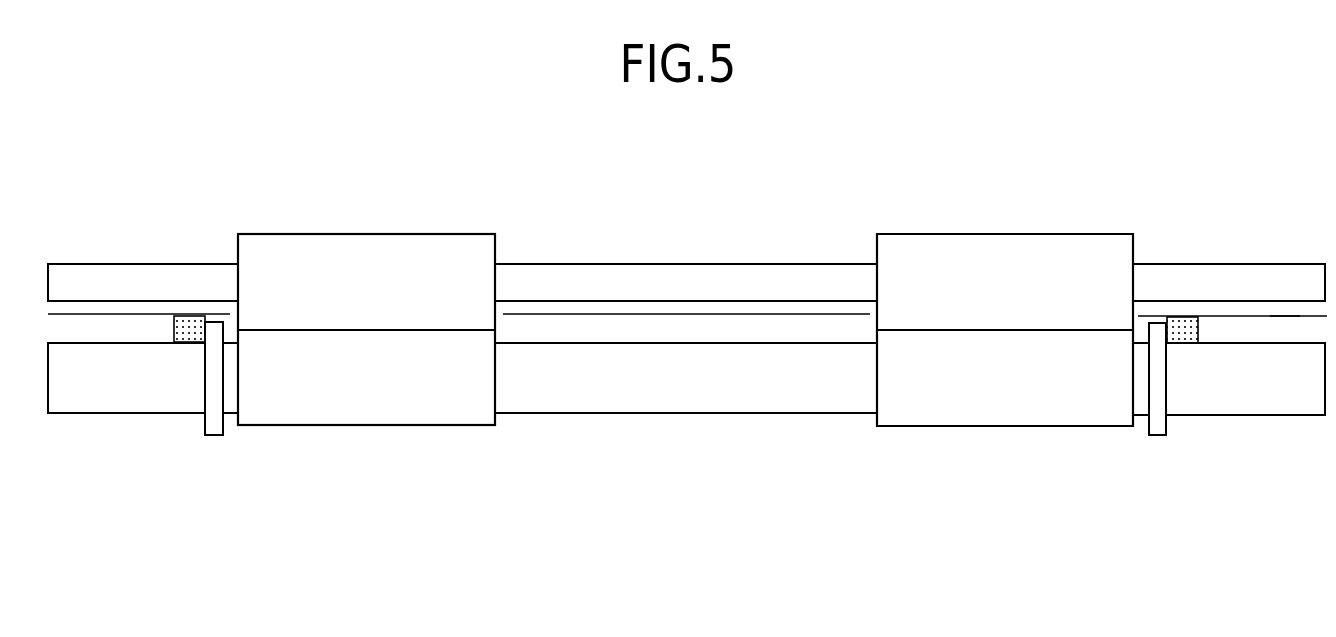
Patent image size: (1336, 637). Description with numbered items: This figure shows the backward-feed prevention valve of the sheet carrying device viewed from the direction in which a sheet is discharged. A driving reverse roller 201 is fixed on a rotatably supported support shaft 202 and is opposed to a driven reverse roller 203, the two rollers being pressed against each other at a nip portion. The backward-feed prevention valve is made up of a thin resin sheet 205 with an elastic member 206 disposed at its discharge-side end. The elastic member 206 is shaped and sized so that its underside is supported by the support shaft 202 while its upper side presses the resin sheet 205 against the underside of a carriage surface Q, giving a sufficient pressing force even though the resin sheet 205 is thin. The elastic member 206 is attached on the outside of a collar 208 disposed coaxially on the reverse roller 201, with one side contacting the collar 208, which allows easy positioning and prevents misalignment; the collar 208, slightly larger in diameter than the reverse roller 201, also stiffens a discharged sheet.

The reverse roller 201 is at (1004, 418).
The support shaft 202 is at (1272, 407).
The reverse roller 203 is at (1003, 243).
The resin sheet 205 is at (1177, 317).
The elastic member 206 is at (1197, 327).
The collar 208 is at (1158, 437).
The carriage surface Q is at (1285, 315).